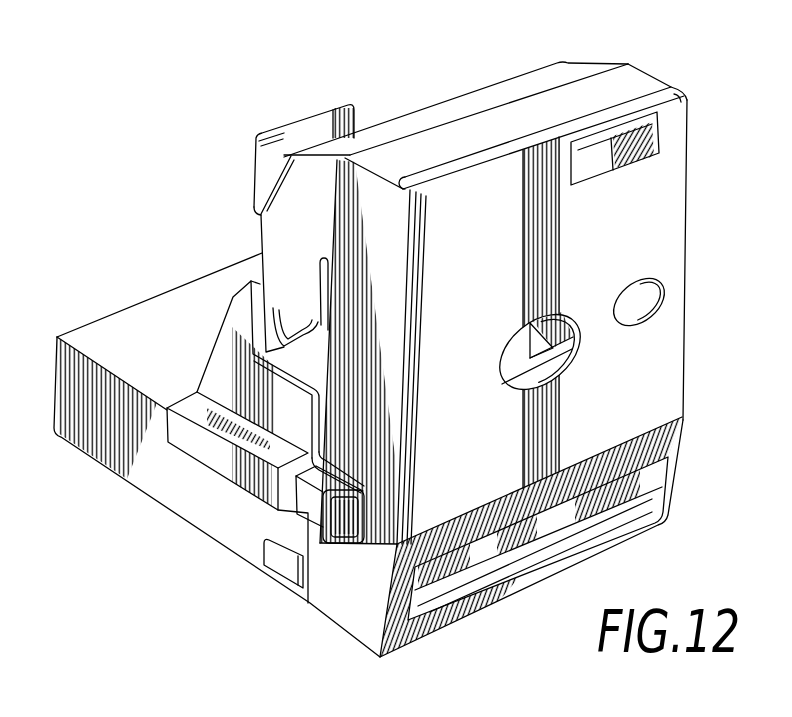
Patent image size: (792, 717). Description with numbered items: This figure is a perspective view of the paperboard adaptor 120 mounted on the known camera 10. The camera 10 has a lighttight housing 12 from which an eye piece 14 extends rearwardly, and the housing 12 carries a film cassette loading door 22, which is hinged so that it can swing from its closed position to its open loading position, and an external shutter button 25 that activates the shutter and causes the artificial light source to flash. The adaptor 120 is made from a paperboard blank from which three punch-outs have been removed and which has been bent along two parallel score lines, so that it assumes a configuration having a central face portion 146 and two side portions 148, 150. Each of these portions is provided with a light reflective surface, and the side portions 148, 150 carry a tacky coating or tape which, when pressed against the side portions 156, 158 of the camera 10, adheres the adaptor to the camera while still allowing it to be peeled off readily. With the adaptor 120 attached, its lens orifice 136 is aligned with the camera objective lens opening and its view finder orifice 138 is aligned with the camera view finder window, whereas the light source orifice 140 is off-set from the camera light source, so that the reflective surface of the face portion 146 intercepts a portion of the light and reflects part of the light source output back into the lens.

The camera 10 is at (483, 83).
The lighttight housing 12 is at (183, 483).
The eye piece 14 is at (280, 128).
The film cassette loading door 22 is at (349, 600).
The shutter button 25 is at (370, 541).
The adaptor 120 is at (660, 200).
The lens orifice 136 is at (514, 354).
The view finder orifice 138 is at (637, 281).
The light source orifice 140 is at (650, 132).
The central face portion 146 is at (663, 388).
The side portion 148 is at (378, 239).
The side portion 150 is at (652, 77).
The side portion of the camera 156 is at (290, 238).
The side portion of the camera 158 is at (598, 57).